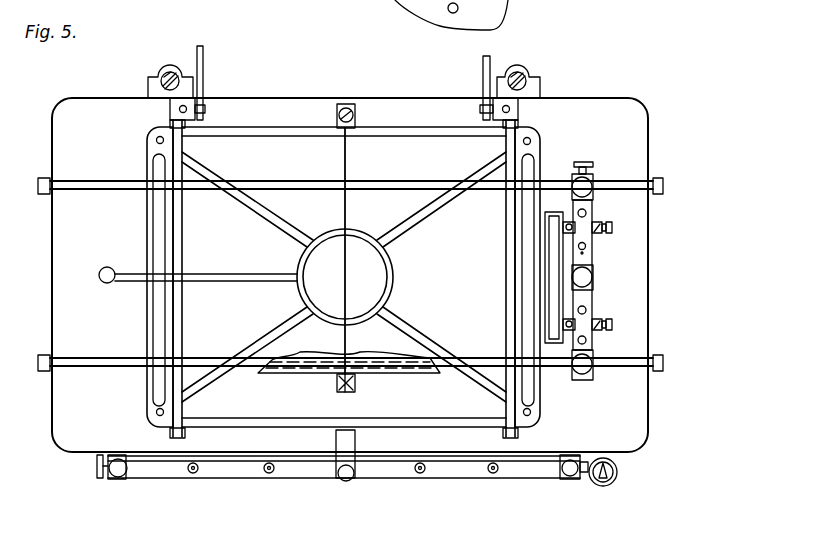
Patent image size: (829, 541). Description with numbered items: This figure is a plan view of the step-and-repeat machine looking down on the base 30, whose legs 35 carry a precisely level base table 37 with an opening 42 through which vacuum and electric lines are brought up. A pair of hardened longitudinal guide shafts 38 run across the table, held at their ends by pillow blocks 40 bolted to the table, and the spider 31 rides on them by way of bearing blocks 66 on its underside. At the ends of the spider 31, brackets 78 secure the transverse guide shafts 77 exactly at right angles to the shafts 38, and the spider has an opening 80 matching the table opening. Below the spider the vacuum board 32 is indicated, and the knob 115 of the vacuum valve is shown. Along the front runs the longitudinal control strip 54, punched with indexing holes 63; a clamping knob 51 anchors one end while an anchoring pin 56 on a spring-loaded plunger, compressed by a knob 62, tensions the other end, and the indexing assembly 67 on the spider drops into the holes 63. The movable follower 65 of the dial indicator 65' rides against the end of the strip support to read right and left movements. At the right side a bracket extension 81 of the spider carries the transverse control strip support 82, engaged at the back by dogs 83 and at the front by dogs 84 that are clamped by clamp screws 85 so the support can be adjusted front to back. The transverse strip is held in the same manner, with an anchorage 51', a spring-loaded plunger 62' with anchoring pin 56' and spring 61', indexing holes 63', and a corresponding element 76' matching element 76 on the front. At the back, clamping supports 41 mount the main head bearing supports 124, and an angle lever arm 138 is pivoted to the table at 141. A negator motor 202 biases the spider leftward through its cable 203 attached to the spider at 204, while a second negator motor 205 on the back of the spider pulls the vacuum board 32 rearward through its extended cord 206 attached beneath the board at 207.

The base 30 is at (700, 436).
The spider 31 is at (200, 390).
The vacuum board 32 is at (412, 374).
The legs 35 is at (505, 4).
The base table 37 is at (625, 417).
The longitudinal guide shafts 38 is at (70, 193).
The pillow blocks 40 is at (38, 184).
The clamping supports 41 is at (152, 78).
The opening 42 is at (368, 278).
The clamping knob 51 is at (562, 486).
The anchorage 51' is at (577, 384).
The longitudinal control strip 54 is at (176, 470).
The anchoring pin 56 is at (111, 485).
The anchoring pin 56' is at (604, 172).
The helical compression spring 61' is at (604, 268).
The knob 62 is at (76, 470).
The spring loaded movable plunger 62' is at (586, 149).
The indexing holes 63 is at (343, 486).
The indexing holes 63' is at (524, 257).
The movable follower 65 is at (377, 10).
The dial indicator 65' is at (510, 275).
The bearing blocks 66 is at (147, 178).
The indexing assembly 67 is at (336, 444).
The roller 76 is at (341, 498).
The roller 76' is at (640, 276).
The transverse guide shafts 77 is at (182, 340).
The brackets 78 is at (170, 124).
The opening 80 is at (372, 294).
The bracket extension 81 is at (545, 300).
The transverse control strip support 82 is at (596, 352).
The dogs 83 is at (563, 226).
The dogs 84 is at (563, 323).
The clamp screws 85 is at (612, 227).
The knob 115 is at (337, 388).
The main head bearing supports 124 is at (171, 72).
The lever arm 138 is at (483, 100).
The pivotal connection 141 is at (206, 109).
The negator motor 202 is at (108, 267).
The cable 203 is at (248, 274).
The attachment point 204 is at (292, 282).
The negator motor 205 is at (348, 104).
The extended cord 206 is at (347, 162).
The attachment point 207 is at (348, 362).